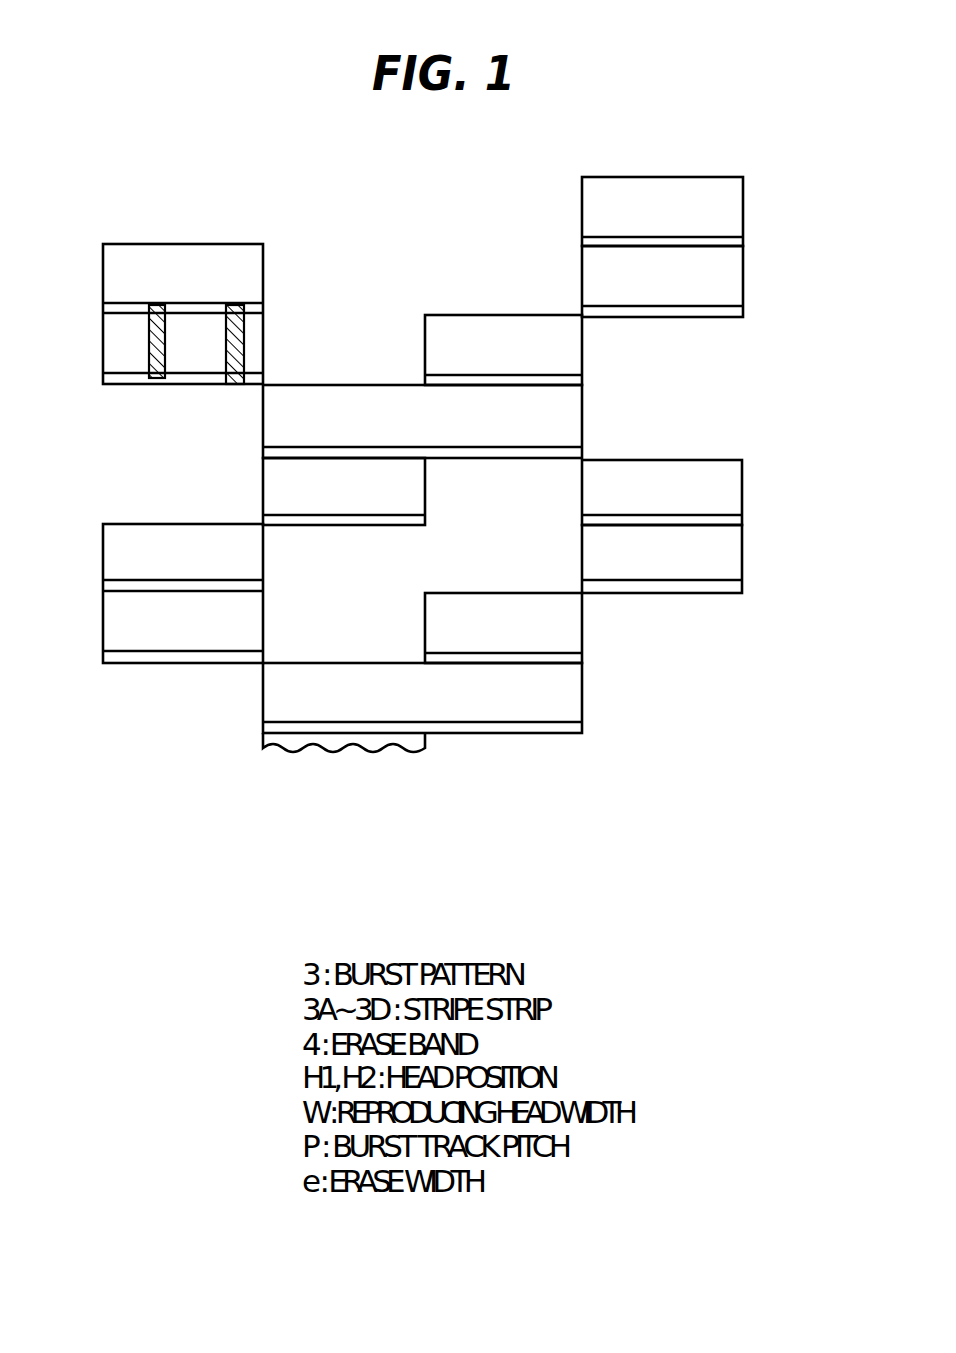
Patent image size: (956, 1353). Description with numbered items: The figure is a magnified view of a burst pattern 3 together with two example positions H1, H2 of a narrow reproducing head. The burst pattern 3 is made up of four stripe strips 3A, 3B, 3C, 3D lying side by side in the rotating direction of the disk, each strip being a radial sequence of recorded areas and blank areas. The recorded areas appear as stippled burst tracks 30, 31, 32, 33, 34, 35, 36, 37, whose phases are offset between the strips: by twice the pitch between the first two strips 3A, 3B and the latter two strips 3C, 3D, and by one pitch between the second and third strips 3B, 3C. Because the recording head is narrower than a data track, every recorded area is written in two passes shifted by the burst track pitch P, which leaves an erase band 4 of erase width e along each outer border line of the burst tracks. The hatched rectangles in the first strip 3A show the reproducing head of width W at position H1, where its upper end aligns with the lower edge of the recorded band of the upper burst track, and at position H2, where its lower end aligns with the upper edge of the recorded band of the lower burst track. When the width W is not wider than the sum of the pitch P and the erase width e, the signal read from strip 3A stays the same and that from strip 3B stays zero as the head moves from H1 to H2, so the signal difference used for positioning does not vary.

The burst pattern 3 is at (475, 510).
The stripe strip 3A is at (216, 540).
The stripe strip 3B is at (469, 611).
The stripe strip 3C is at (495, 544).
The stripe strip 3D is at (714, 473).
The erase band 4 is at (510, 380).
The burst track 30 is at (712, 190).
The burst track 31 is at (695, 283).
The burst track 32 is at (455, 328).
The burst track 33 is at (475, 418).
The burst track 34 is at (718, 472).
The burst track 35 is at (702, 560).
The burst track 36 is at (508, 608).
The burst track 37 is at (573, 705).
The head position H1 is at (148, 342).
The head position H2 is at (225, 353).
The reproducing head width W is at (263, 311).
The burst track pitch P is at (743, 317).
The erase width e is at (743, 246).